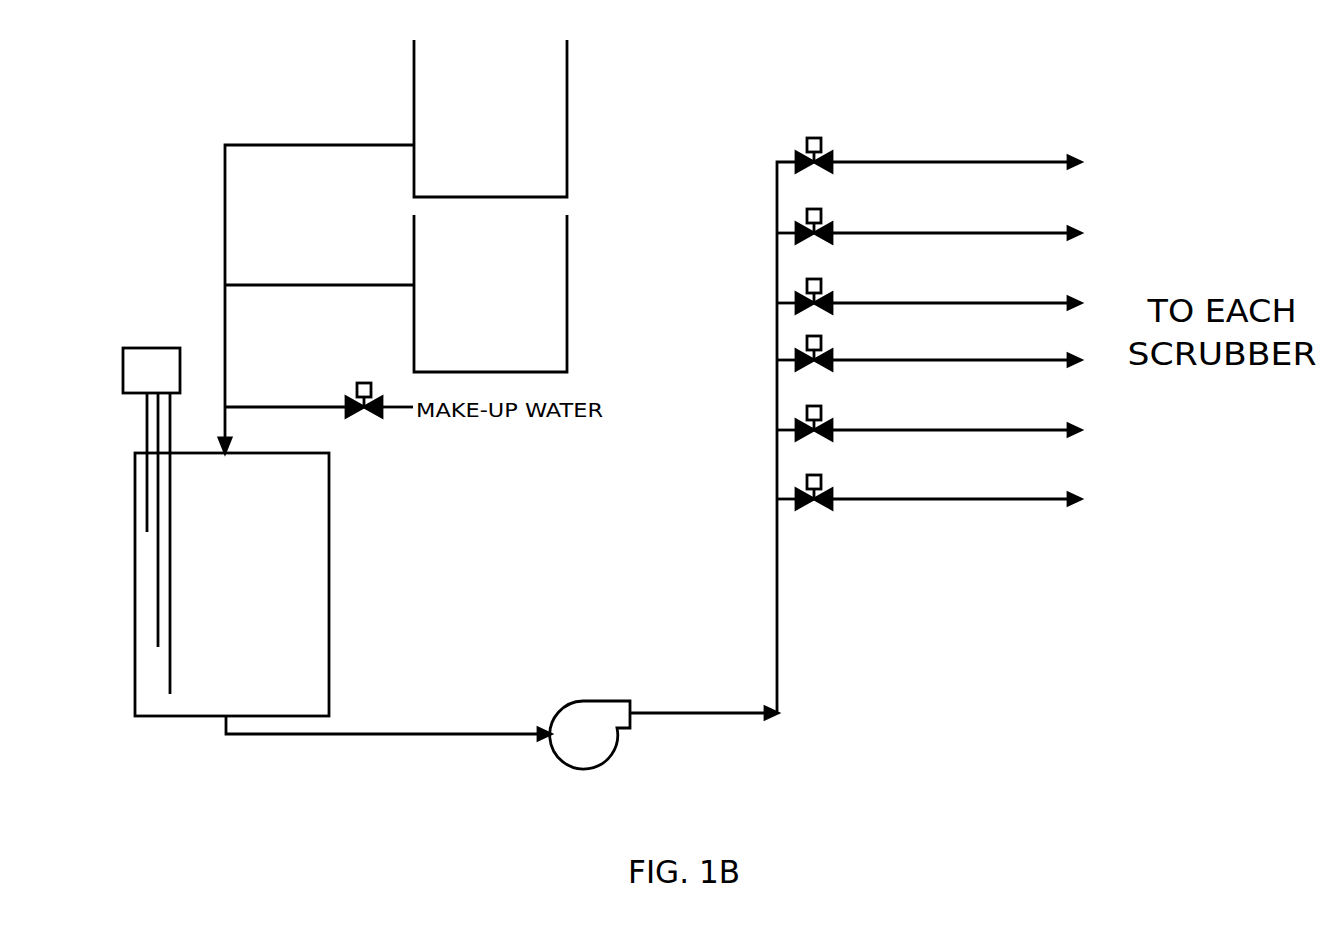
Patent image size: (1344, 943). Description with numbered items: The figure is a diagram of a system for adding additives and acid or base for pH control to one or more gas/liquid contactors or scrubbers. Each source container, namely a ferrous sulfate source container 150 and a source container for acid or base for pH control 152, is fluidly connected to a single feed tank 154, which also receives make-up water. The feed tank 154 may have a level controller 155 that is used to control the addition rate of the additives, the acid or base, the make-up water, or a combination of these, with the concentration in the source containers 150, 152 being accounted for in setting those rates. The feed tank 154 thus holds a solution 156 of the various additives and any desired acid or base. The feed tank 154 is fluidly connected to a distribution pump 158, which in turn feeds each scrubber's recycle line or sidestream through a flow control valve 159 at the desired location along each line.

The ferrous sulfate source container 150 is at (567, 108).
The source container for acid or base 152 is at (567, 282).
The feed tank 154 is at (329, 527).
The level controller 155 is at (167, 348).
The solution 156 is at (278, 647).
The distribution pump 158 is at (583, 769).
The flow control valve 159 is at (815, 138).